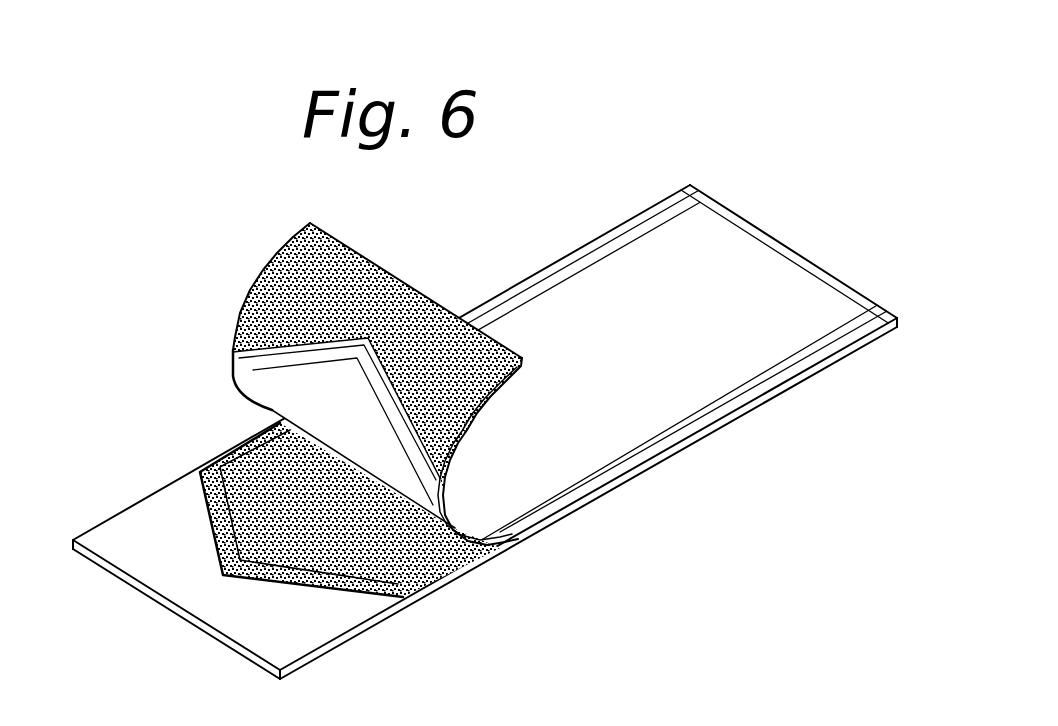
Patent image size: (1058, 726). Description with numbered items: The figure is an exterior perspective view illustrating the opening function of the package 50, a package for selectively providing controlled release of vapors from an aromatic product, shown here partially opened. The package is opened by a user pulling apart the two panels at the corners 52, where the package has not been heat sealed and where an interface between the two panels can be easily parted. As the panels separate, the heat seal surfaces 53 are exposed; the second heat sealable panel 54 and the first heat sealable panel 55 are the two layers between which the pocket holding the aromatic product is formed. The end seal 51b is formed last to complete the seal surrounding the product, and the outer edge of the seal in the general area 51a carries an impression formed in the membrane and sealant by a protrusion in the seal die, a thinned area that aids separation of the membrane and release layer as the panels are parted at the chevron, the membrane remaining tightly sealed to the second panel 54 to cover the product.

The package 50 is at (485, 428).
The outer edge area of the seal 51a is at (485, 445).
The end seal 51b is at (795, 257).
The corners 52 is at (362, 401).
The heat seal surfaces 53 is at (242, 320).
The heat sealable panel 02 54 is at (155, 512).
The heat sealable panel 01 55 is at (293, 393).